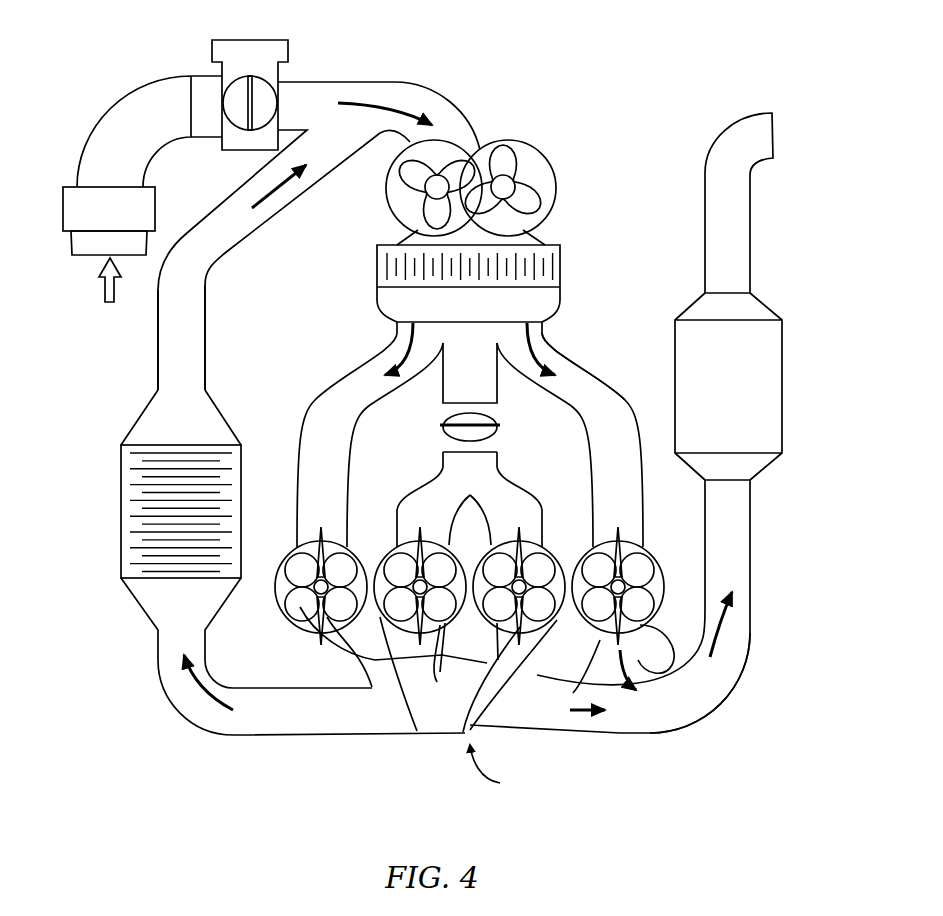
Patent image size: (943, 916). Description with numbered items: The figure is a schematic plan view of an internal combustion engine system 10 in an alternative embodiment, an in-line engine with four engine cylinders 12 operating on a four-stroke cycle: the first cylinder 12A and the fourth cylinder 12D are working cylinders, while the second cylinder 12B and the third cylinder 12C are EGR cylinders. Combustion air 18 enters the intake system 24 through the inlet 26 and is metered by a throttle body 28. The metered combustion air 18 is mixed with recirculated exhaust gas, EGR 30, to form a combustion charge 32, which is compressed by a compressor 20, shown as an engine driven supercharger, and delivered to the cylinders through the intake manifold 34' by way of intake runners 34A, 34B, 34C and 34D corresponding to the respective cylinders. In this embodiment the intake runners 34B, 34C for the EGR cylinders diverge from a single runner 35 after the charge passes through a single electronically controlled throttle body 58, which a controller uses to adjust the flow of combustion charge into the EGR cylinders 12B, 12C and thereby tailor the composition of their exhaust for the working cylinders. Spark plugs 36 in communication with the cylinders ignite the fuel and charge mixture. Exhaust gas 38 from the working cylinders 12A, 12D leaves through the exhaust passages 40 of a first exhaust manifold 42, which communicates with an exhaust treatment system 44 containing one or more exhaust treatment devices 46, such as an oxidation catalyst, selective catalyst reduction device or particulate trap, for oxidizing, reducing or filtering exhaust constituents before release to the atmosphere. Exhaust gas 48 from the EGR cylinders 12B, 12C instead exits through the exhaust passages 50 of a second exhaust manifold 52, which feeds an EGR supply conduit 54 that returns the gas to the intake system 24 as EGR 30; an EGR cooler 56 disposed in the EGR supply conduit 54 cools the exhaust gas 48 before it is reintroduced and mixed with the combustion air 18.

The internal combustion engine system 10 is at (745, 706).
The engine cylinders 12 is at (457, 630).
The cylinder #1 12A is at (287, 612).
The cylinder #2 12B is at (372, 643).
The cylinder #3 12C is at (543, 645).
The cylinder #4 12D is at (660, 600).
The combustion air 18 is at (104, 296).
The compressor 20 is at (548, 163).
The intake system 24 is at (100, 110).
The inlet 26 is at (125, 245).
The throttle body 28 is at (258, 60).
The EGR 30 is at (278, 193).
The combustion charge 32 is at (380, 102).
The intake runner 34A is at (370, 434).
The intake runner 34B is at (433, 507).
The intake runner 34C is at (506, 507).
The intake runner 34D is at (570, 434).
The intake manifold 34' is at (596, 351).
The single runner 35 is at (467, 380).
The spark plugs 36 is at (313, 627).
The exhaust gas 38 is at (728, 643).
The exhaust passages 40 is at (317, 643).
The first exhaust manifold 42 is at (706, 712).
The exhaust treatment system 44 is at (780, 205).
The exhaust treatment devices 46 is at (728, 386).
The exhaust gas 48 is at (193, 690).
The exhaust passages 50 is at (453, 730).
The second exhaust manifold 52 is at (496, 770).
The EGR supply conduit 54 is at (212, 360).
The EGR cooler 56 is at (114, 518).
The throttle body 58 is at (470, 430).